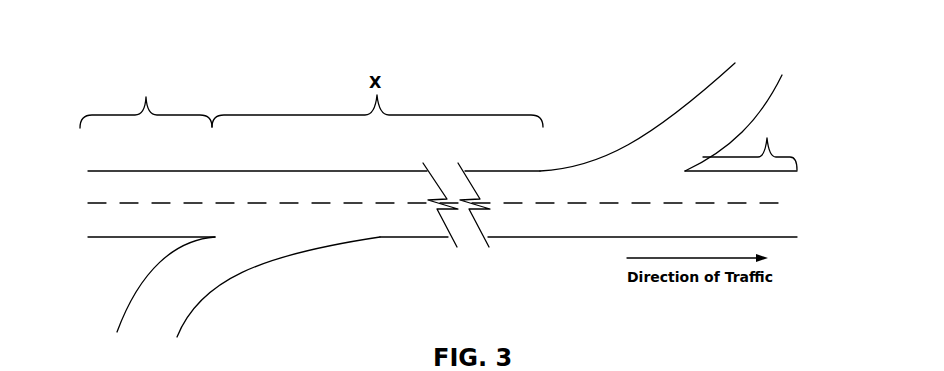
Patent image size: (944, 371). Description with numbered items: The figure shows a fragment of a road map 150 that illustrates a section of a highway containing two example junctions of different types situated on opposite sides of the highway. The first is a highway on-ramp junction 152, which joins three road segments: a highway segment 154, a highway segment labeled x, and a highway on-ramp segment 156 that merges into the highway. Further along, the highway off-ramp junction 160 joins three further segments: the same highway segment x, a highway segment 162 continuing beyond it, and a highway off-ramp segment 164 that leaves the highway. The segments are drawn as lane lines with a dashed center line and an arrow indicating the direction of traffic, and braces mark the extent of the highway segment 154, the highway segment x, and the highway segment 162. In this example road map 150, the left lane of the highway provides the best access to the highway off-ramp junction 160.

The road map 150 is at (130, 52).
The highway on-ramp junction 152 is at (272, 275).
The highway segment 154 is at (146, 98).
The highway on-ramp segment 156 is at (137, 293).
The highway off-ramp junction 160 is at (655, 128).
The highway segment 162 is at (741, 143).
The highway off-ramp segment 164 is at (723, 77).